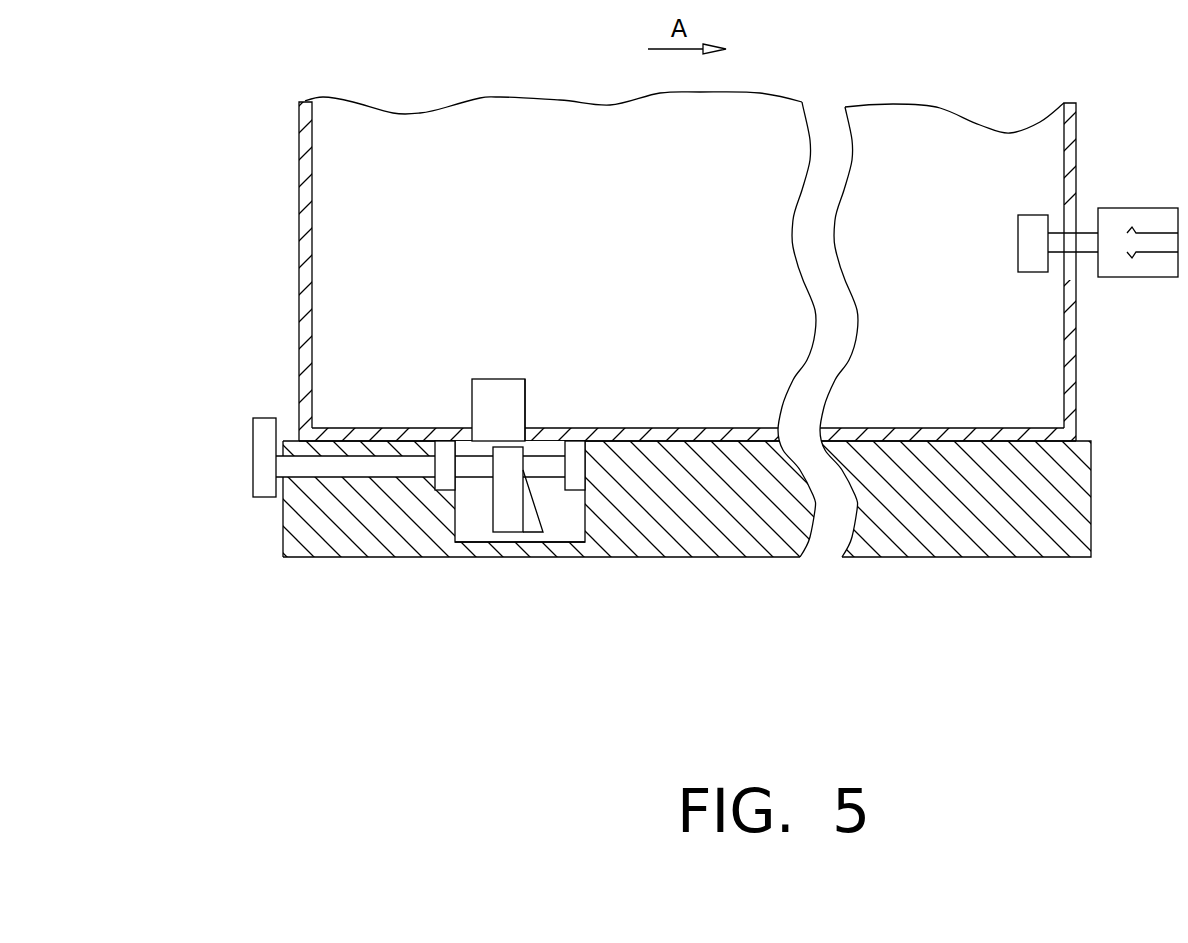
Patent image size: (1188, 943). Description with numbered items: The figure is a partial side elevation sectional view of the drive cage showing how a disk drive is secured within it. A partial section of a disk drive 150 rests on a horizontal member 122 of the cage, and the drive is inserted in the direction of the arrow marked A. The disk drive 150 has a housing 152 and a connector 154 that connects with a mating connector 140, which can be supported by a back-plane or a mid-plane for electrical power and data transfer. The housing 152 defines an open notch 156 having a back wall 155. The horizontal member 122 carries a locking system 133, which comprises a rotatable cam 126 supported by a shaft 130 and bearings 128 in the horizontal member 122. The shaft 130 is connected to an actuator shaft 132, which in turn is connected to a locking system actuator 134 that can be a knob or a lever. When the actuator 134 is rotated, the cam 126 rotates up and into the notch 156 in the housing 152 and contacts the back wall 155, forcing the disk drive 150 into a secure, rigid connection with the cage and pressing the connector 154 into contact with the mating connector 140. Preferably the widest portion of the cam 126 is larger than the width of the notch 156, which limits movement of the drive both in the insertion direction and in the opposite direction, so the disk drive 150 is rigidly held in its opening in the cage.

The horizontal member 122 is at (708, 557).
The rotatable cam 126 is at (472, 541).
The bearings 128 is at (445, 455).
The shaft 130 is at (541, 465).
The actuator shaft 132 is at (370, 470).
The locking system 133 is at (507, 578).
The locking system actuator 134 is at (262, 463).
The mating connector 140 is at (1142, 215).
The disk drive 150 is at (283, 229).
The housing 152 is at (302, 122).
The connector 154 is at (1018, 252).
The back wall 155 is at (527, 392).
The open notch 156 is at (483, 392).